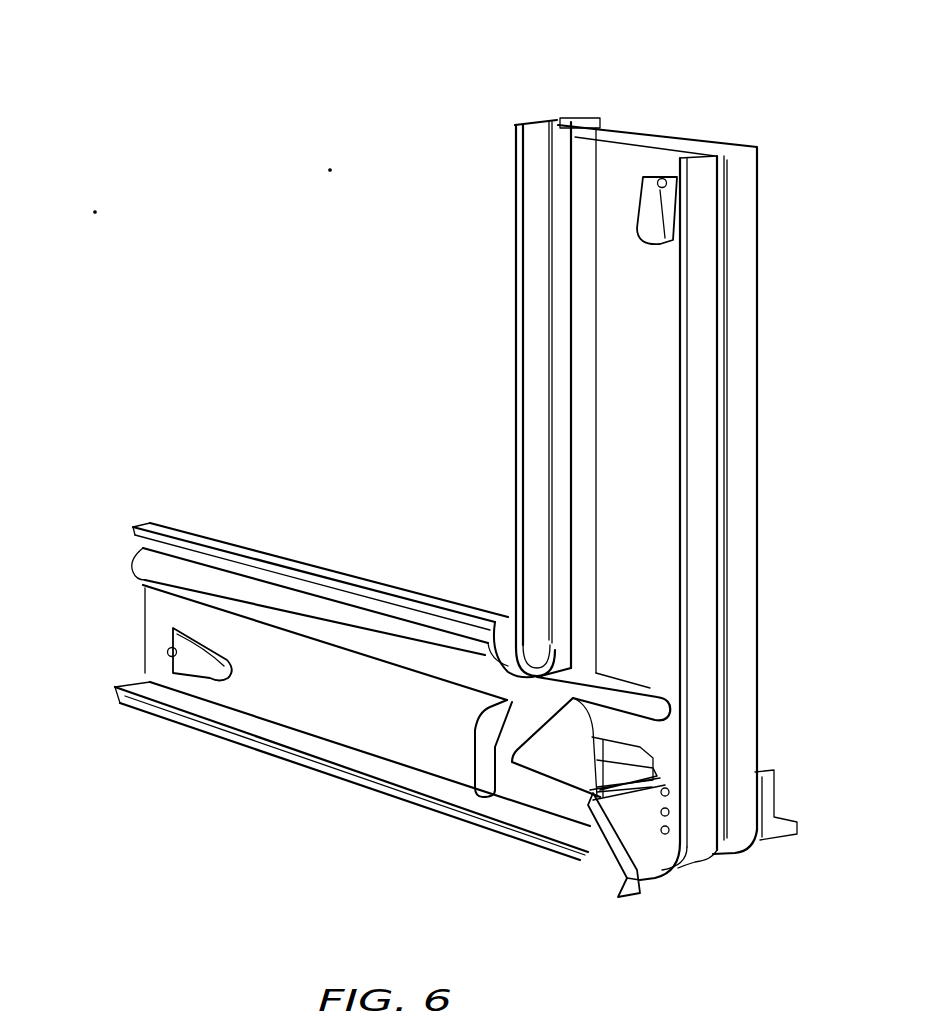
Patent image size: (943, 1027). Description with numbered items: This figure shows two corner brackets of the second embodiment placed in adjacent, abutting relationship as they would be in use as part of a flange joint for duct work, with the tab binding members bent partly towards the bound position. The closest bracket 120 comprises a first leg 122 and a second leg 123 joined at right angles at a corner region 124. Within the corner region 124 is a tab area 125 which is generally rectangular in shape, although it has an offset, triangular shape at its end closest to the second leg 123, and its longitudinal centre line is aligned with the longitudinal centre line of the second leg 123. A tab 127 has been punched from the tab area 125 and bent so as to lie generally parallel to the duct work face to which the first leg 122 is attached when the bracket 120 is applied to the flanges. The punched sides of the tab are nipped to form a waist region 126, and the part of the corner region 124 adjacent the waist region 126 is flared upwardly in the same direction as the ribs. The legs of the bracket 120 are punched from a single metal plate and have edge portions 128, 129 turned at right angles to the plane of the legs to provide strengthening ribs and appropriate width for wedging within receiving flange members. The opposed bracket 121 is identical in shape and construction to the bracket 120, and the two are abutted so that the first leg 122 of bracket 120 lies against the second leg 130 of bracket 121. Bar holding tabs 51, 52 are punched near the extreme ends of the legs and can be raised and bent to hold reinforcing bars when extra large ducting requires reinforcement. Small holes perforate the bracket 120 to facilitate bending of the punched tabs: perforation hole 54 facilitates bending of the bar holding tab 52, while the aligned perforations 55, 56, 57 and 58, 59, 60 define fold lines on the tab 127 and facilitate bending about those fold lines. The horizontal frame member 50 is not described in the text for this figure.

The horizontal frame member 50 is at (378, 648).
The bar holding tab 51 is at (650, 208).
The bar holding tab 52 is at (207, 676).
The perforation hole 54 is at (167, 652).
The perforation 55 is at (670, 792).
The perforation 56 is at (670, 812).
The perforation 57 is at (670, 830).
The perforation 58 is at (583, 816).
The perforation 59 is at (590, 845).
The perforation 60 is at (600, 880).
The bracket 120 is at (177, 613).
The opposed bracket 121 is at (661, 472).
The first leg 122 is at (560, 240).
The second leg 123 is at (303, 713).
The corner region 124 is at (726, 882).
The tab area 125 is at (540, 775).
The waist region 126 is at (635, 835).
The tab 127 is at (606, 890).
The edge portion 128 is at (238, 562).
The edge portion 129 is at (340, 755).
The second leg 130 is at (758, 192).